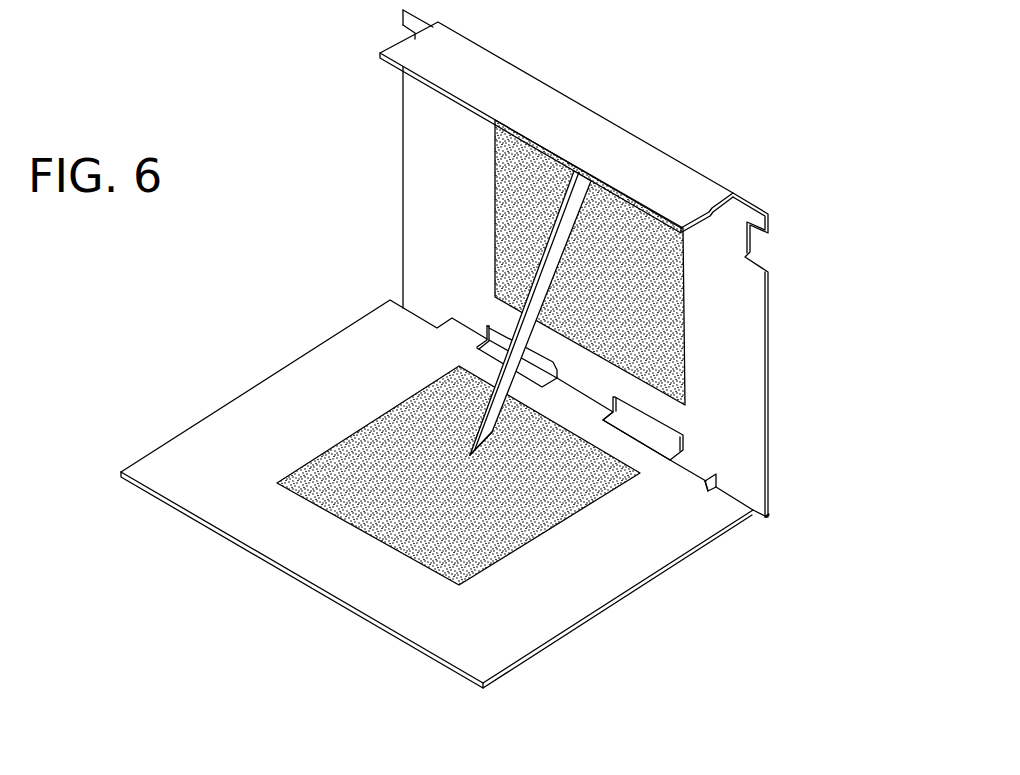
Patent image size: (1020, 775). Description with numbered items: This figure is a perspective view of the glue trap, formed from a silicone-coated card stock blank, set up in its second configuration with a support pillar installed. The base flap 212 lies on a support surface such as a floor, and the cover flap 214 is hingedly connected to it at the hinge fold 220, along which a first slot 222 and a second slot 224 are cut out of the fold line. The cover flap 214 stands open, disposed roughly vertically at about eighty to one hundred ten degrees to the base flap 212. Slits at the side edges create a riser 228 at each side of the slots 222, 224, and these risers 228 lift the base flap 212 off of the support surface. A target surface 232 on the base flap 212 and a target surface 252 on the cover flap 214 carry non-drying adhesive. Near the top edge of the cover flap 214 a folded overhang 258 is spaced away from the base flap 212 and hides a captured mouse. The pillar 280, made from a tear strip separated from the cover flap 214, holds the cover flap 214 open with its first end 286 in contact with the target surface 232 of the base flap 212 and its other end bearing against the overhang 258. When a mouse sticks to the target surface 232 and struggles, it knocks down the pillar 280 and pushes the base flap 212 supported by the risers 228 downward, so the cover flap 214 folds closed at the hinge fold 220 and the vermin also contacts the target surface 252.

The base flap 212 is at (183, 458).
The cover flap 214 is at (750, 350).
The hinge fold 220 is at (708, 468).
The first slot 222 is at (497, 333).
The second slot 224 is at (675, 443).
The riser 228 is at (772, 508).
The target surface 232 is at (503, 533).
The target surface 252 is at (672, 292).
The folded overhang 258 is at (682, 178).
The pillar 280 is at (548, 230).
The first end 286 is at (478, 432).